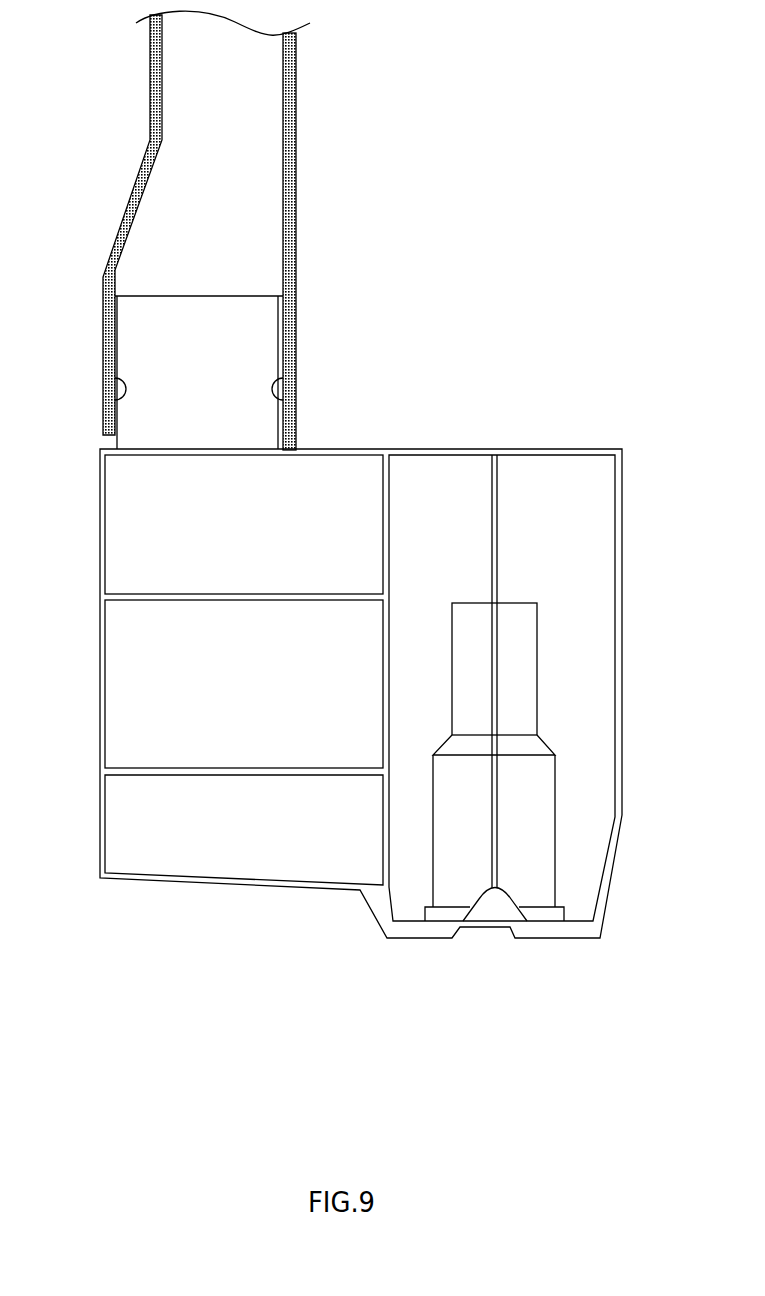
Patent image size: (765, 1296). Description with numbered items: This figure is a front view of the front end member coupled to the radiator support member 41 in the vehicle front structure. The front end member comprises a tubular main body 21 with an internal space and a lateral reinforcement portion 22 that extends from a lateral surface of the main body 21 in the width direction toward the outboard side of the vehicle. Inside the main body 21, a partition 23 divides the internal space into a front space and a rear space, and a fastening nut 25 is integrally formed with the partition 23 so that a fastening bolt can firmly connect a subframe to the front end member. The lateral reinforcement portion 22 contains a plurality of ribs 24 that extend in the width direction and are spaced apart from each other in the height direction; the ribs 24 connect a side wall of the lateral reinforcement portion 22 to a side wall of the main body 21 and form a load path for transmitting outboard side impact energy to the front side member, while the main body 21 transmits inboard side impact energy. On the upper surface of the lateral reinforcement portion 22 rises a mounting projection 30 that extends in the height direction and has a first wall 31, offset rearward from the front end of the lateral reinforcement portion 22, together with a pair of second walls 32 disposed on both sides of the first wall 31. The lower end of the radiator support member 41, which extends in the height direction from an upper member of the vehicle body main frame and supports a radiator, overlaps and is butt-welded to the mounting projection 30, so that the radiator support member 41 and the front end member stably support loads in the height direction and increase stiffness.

The main body 21 is at (401, 647).
The lateral reinforcement portion 22 is at (244, 721).
The partition 23 is at (575, 791).
The ribs 24 is at (244, 602).
The fastening nut 25 is at (518, 666).
The mounting projection 30 is at (198, 327).
The first wall 31 is at (145, 338).
The second walls 32 is at (103, 398).
The radiator support member 41 is at (297, 194).